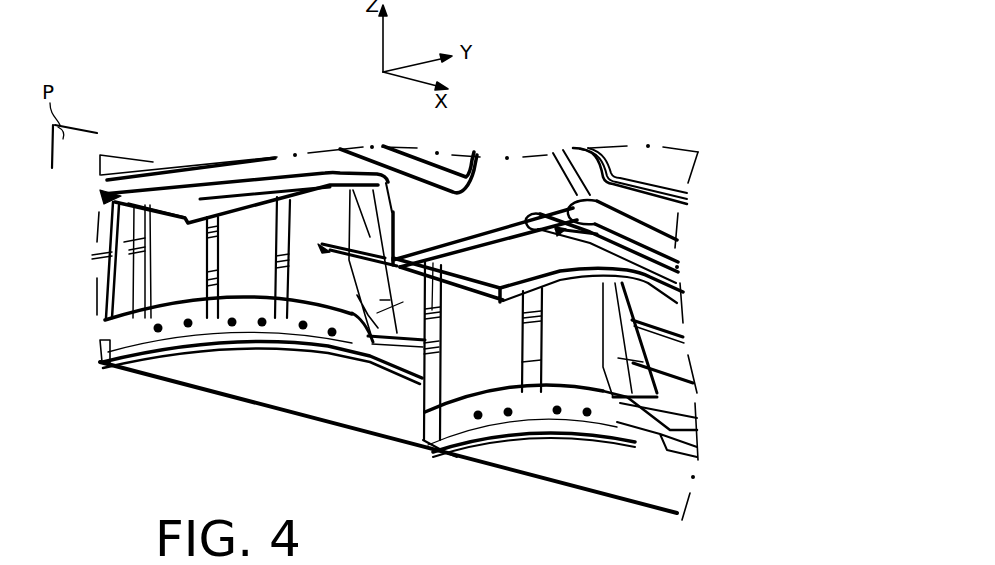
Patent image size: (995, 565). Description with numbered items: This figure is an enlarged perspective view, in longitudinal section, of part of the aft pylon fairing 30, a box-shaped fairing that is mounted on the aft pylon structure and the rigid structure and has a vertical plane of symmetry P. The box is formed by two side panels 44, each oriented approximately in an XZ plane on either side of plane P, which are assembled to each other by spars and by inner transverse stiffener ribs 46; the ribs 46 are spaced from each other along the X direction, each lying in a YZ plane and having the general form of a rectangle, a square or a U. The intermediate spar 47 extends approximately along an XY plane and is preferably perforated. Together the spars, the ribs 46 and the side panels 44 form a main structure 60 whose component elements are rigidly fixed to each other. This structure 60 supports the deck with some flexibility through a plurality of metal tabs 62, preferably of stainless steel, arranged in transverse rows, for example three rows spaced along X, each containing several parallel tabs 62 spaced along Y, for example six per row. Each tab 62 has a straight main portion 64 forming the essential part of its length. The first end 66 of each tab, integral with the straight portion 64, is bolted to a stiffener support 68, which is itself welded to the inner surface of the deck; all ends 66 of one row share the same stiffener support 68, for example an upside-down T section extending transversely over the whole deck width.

The aft pylon fairing 30 is at (238, 103).
The side panels 44 is at (637, 167).
The inner transverse stiffener ribs 46 is at (490, 200).
The intermediate spar 47 is at (287, 163).
The main structure 60 is at (146, 182).
The metal tabs 62 is at (190, 290).
The straight main portion 64 is at (233, 228).
The first end 66 is at (126, 368).
The stiffener support 68 is at (172, 327).